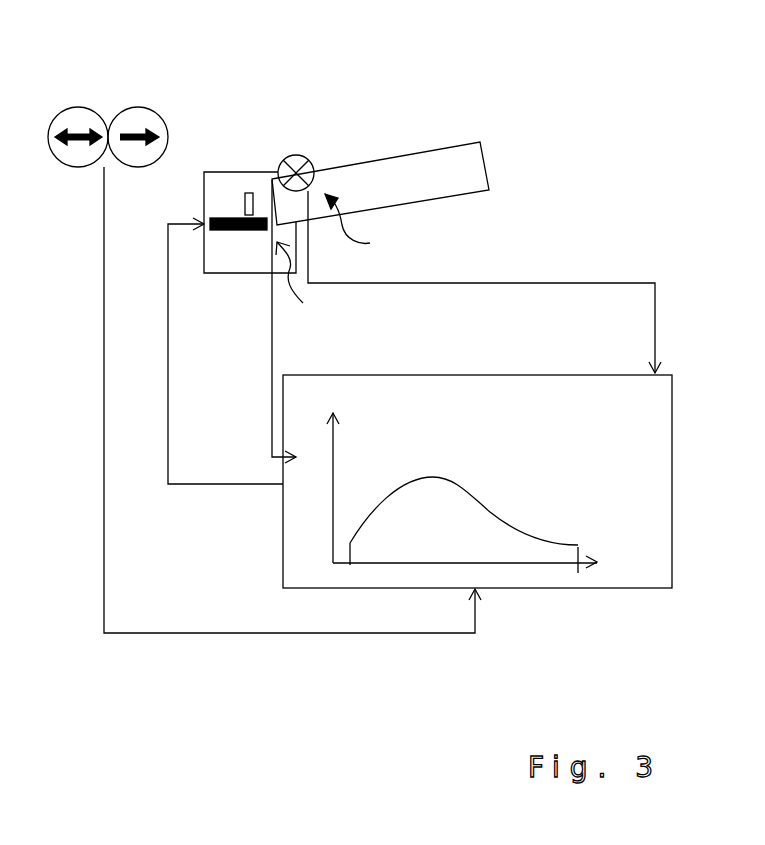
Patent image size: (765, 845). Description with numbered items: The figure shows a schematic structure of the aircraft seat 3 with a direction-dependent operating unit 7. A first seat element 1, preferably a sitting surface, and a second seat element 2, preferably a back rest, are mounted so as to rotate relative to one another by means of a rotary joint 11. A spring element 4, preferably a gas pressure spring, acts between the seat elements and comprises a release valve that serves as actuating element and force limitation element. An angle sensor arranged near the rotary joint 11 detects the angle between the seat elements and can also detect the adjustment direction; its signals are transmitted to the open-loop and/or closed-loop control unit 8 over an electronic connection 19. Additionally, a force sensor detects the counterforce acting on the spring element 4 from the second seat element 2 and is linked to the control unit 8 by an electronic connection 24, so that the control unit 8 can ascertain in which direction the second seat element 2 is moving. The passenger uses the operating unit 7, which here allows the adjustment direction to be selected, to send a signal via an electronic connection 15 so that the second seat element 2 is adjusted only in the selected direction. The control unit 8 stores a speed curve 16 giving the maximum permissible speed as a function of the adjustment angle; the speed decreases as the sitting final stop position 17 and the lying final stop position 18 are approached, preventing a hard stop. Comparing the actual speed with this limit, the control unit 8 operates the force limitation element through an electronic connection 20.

The first seat element 1 is at (203, 188).
The second seat element 2 is at (413, 170).
The aircraft seat 3 is at (238, 106).
The spring element 4 is at (245, 230).
The operating unit 7 is at (106, 102).
The open-loop and/or closed-loop control unit 8 is at (642, 572).
The rotary joint 11 is at (306, 158).
The electronic connection 15 is at (205, 633).
The speed curve 16 is at (478, 503).
The sitting final stop position 17 is at (352, 581).
The lying final stop position 18 is at (570, 580).
The electronic connection 19 is at (555, 281).
The electronic connection 20 is at (242, 484).
The electronic connection 24 is at (272, 337).